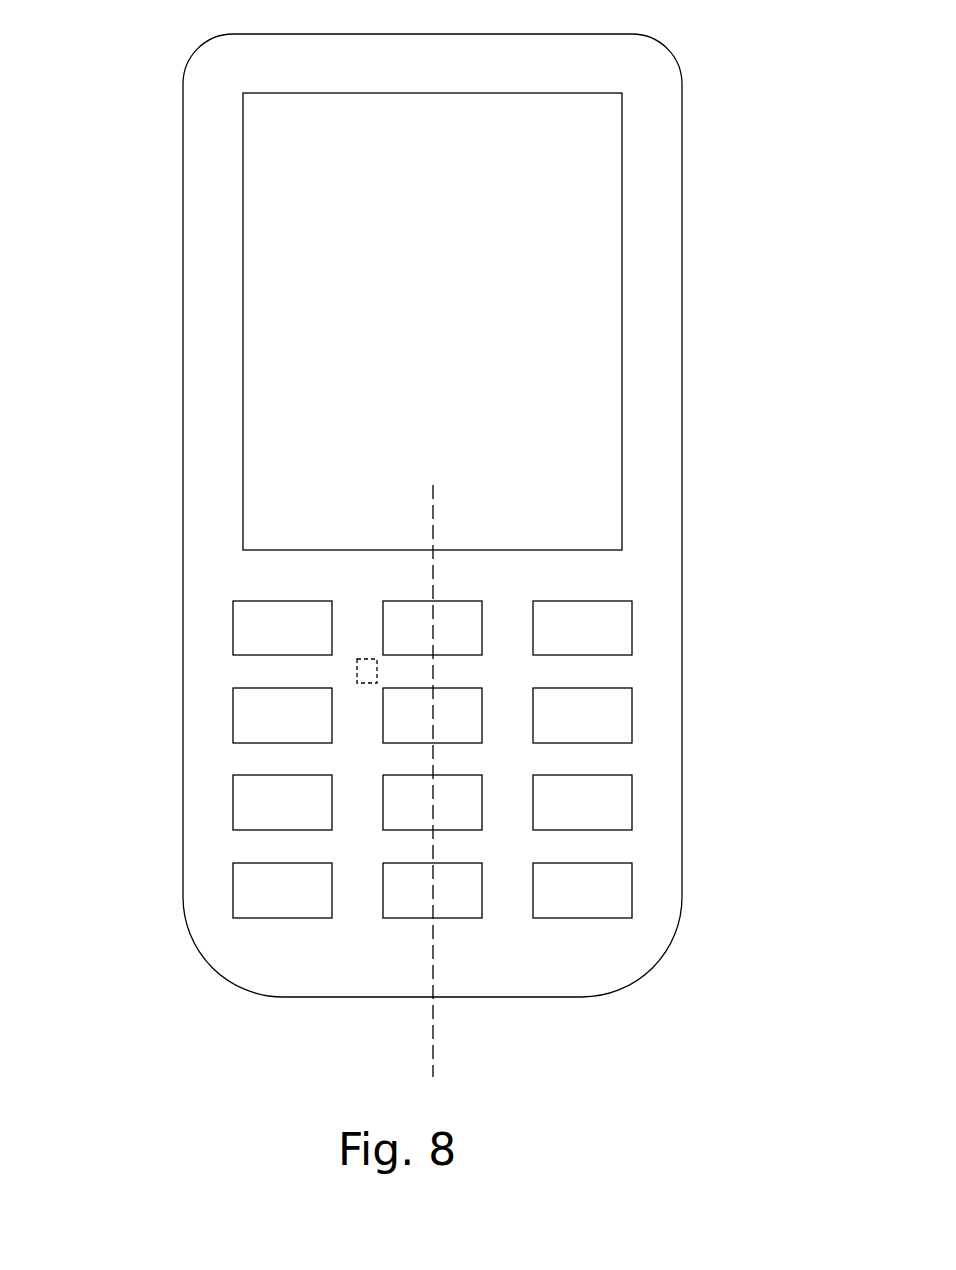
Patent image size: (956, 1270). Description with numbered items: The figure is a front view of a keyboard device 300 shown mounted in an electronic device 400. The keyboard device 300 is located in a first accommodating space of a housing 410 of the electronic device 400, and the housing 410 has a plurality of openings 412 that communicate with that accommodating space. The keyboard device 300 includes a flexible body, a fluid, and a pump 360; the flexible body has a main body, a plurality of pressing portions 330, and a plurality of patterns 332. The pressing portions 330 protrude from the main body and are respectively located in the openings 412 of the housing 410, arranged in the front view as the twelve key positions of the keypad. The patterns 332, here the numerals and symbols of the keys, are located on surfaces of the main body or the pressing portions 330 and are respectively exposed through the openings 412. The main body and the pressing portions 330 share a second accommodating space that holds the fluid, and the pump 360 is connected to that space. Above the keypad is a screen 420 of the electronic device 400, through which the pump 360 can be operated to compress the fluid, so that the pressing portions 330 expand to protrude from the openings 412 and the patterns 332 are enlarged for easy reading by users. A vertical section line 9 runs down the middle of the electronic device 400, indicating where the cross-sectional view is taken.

The electronic device 400 is at (110, 35).
The housing 410 is at (620, 945).
The openings 412 is at (612, 752).
The screen 420 is at (597, 300).
The keyboard device 300 is at (236, 618).
The pressing portions 330 is at (663, 716).
The patterns 332 is at (590, 714).
The pump 360 is at (355, 672).
The section line 9- 9 is at (440, 503).